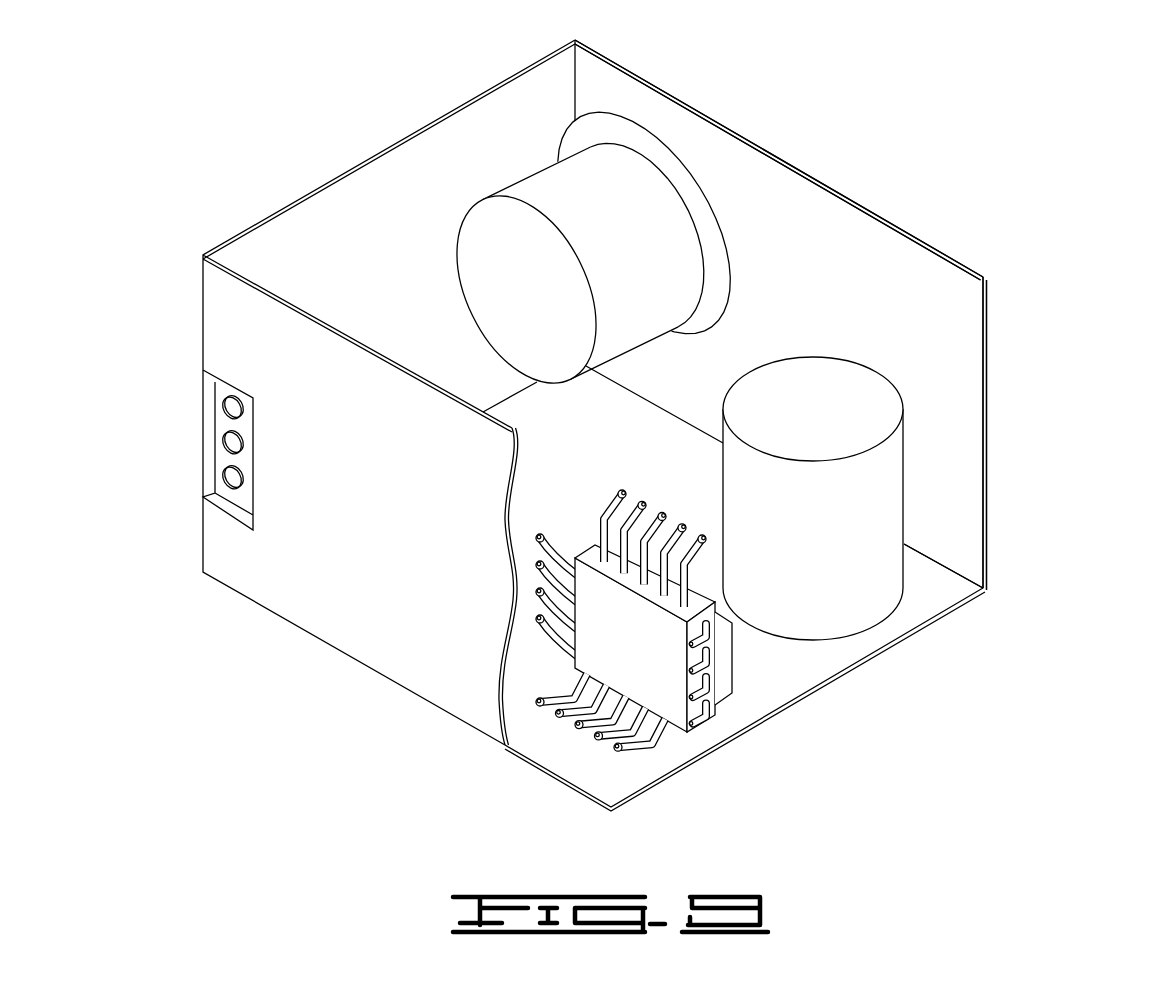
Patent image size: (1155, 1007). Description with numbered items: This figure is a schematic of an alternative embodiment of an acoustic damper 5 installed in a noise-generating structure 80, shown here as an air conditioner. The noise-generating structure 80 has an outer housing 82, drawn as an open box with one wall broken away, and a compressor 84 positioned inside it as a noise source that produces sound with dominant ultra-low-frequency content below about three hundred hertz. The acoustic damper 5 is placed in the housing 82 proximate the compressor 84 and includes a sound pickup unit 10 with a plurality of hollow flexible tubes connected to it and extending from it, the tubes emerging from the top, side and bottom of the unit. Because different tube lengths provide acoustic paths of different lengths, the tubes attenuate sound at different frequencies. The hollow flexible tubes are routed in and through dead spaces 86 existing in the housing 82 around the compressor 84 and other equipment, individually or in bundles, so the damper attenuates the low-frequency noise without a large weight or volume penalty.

The acoustic damper 5 is at (710, 720).
The sound pickup unit 10 is at (733, 659).
The noise-generating structure 80 is at (985, 392).
The housing 82 is at (985, 392).
The compressor 84 is at (873, 585).
The dead spaces 86 is at (780, 228).